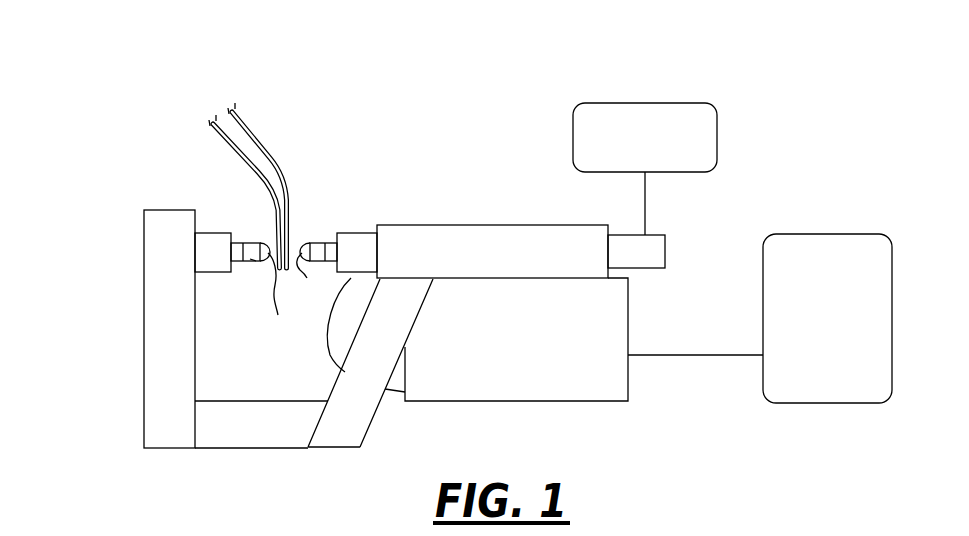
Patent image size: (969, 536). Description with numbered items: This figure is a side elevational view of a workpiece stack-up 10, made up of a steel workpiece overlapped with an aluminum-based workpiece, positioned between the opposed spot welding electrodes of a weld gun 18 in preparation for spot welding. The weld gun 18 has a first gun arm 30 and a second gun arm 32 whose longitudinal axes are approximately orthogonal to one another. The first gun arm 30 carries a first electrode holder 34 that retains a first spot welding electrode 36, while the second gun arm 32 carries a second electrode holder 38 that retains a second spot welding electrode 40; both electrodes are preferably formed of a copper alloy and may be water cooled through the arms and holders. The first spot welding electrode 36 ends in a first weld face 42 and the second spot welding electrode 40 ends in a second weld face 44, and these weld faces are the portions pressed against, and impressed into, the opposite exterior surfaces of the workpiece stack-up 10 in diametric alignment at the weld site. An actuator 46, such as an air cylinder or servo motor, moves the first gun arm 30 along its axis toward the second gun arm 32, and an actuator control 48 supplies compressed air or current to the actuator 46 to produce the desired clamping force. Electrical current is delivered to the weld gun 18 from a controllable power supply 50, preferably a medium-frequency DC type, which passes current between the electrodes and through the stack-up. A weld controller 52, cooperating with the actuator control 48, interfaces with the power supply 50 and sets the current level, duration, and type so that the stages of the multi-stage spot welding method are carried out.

The workpiece stack-up 10 is at (316, 85).
The weld gun 18 is at (470, 161).
The first gun arm 30 is at (513, 248).
The second gun arm 32 is at (157, 280).
The first electrode holder 34 is at (330, 252).
The first spot welding electrode 36 is at (303, 231).
The second electrode holder 38 is at (241, 250).
The second spot welding electrode 40 is at (254, 268).
The first weld face 42 is at (312, 277).
The second weld face 44 is at (284, 295).
The actuator 46 is at (651, 252).
The actuator control 48 is at (670, 122).
The power supply 50 is at (550, 388).
The weld controller 52 is at (838, 381).